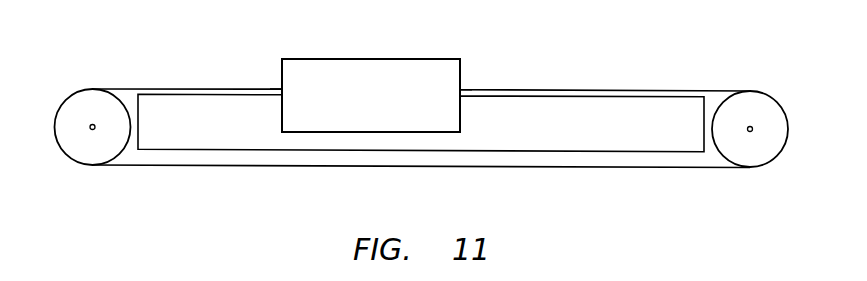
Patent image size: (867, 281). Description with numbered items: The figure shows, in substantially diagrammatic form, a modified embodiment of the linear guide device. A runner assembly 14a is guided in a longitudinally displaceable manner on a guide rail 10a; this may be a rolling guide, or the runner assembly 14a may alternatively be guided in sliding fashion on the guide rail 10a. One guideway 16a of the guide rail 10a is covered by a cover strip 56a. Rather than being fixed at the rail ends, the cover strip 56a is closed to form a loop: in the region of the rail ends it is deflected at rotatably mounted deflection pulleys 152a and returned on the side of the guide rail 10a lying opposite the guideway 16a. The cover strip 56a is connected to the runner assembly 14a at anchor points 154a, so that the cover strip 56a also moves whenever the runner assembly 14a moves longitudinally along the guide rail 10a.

The guide rail 10a is at (582, 153).
The runner assembly 14a is at (370, 58).
The guideway 16a is at (596, 93).
The cover strip 56a is at (188, 88).
The deflection pulleys 152a is at (80, 153).
The anchor points 154a is at (285, 90).